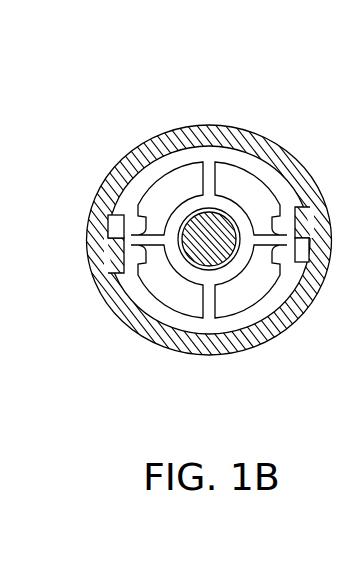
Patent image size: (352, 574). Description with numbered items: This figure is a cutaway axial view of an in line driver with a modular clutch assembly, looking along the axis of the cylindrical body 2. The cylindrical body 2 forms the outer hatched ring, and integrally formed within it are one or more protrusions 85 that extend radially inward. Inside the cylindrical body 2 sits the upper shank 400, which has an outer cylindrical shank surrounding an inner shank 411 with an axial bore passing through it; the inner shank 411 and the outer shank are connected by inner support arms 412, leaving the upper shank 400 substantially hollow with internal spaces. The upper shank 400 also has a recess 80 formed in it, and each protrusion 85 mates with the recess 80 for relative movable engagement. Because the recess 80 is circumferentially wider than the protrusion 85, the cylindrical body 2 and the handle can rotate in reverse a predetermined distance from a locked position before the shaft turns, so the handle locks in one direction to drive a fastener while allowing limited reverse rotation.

The cylindrical body 2 is at (103, 187).
The recess 80 is at (133, 240).
The protrusion 85 is at (97, 267).
The upper shank 400 is at (202, 185).
The inner shank 411 is at (237, 216).
The inner support arms 412 is at (169, 214).